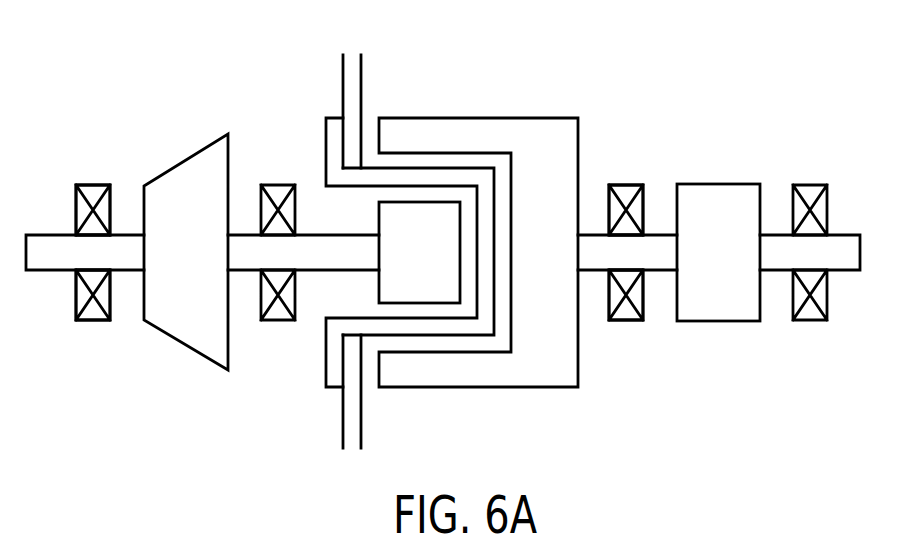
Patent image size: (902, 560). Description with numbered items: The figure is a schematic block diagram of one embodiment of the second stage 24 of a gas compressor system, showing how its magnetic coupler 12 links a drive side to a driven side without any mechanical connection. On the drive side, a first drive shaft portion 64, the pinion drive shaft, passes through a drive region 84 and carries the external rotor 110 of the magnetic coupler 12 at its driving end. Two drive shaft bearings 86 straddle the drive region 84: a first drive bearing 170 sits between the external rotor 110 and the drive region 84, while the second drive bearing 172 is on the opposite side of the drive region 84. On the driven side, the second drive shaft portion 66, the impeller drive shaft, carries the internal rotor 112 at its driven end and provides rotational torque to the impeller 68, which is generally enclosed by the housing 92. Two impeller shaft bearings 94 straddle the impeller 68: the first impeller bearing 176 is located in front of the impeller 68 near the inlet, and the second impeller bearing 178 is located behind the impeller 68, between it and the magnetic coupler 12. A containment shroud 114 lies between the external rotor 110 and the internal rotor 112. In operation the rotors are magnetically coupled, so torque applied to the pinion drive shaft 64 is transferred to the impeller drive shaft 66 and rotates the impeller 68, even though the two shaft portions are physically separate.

The second stage 24 is at (450, 60).
The magnetic coupler 12 is at (480, 98).
The external rotor 110 is at (565, 117).
The internal rotor 112 is at (378, 283).
The containment shroud 114 is at (333, 357).
The housing 92 is at (352, 417).
The impeller 68 is at (187, 159).
The second drive shaft portion 66 is at (48, 262).
The first drive shaft portion 64 is at (848, 255).
The drive region 84 is at (718, 300).
The impeller shaft bearings 94 is at (75, 211).
The first impeller bearing 176 is at (93, 252).
The second impeller bearing 178 is at (279, 185).
The drive shaft bearings 86 is at (627, 185).
The first drive bearing 170 is at (626, 252).
The fourth bearing 172 is at (808, 185).